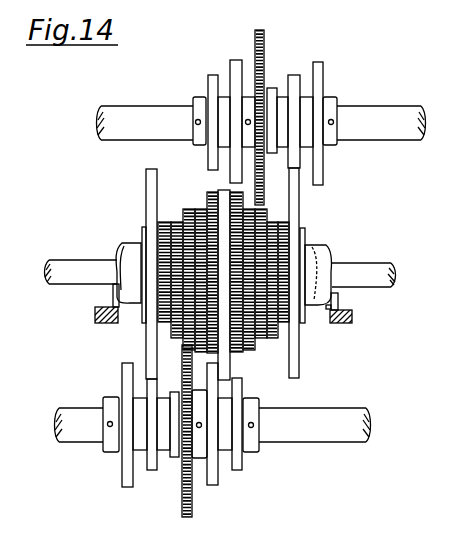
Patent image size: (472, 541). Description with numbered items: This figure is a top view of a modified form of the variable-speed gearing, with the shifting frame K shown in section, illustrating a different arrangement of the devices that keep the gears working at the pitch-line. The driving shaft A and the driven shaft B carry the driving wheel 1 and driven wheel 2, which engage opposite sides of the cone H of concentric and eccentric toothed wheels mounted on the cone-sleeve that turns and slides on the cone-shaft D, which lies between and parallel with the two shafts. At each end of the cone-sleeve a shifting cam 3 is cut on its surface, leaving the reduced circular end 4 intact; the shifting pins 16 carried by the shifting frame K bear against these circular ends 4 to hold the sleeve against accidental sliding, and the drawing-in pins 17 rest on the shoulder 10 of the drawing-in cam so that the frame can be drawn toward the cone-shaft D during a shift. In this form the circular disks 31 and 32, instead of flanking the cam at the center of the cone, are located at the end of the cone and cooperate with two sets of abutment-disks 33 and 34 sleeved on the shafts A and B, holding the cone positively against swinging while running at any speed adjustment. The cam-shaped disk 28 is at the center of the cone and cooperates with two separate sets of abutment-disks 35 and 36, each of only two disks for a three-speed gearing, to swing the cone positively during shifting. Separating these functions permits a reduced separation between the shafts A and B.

The driving wheel 1 is at (192, 535).
The driven wheel 2 is at (260, 108).
The shifting cam 3 is at (141, 243).
The reduced circular end 4 is at (121, 286).
The shoulder 10 is at (145, 229).
The shifting pin 16 is at (340, 297).
The drawing-in pin 17 is at (330, 310).
The cam-shaped disk 28 is at (231, 366).
The circular disk 31 is at (152, 207).
The circular disk 32 is at (302, 213).
The abutment-disks 33 is at (138, 430).
The abutment-disks 34 is at (312, 57).
The abutment-disks 35 is at (223, 430).
The abutment-disks 36 is at (232, 55).
The driving shaft A is at (358, 404).
The driven shaft B is at (395, 104).
The cone-shaft D is at (81, 282).
The cone H is at (223, 269).
The shifting frame K is at (226, 313).